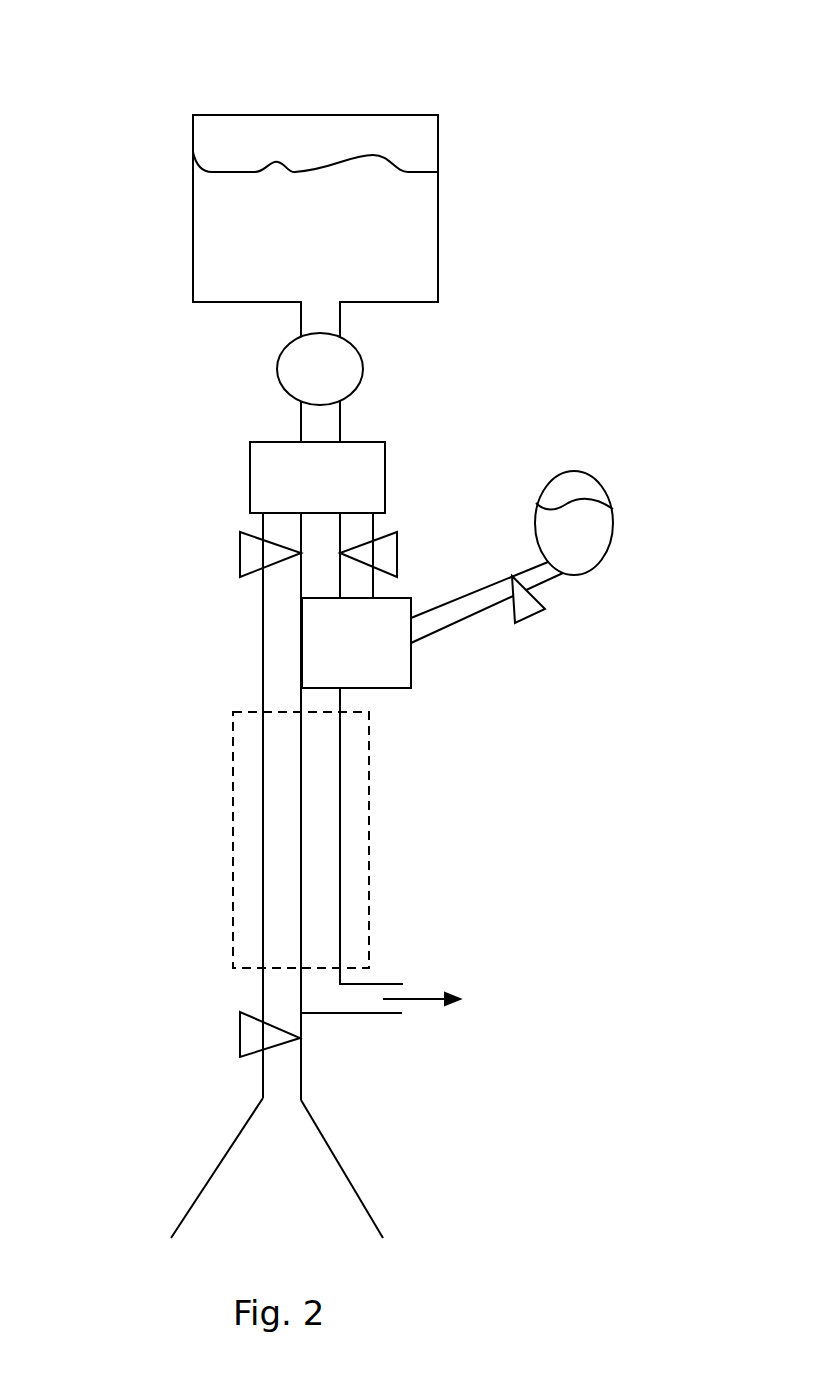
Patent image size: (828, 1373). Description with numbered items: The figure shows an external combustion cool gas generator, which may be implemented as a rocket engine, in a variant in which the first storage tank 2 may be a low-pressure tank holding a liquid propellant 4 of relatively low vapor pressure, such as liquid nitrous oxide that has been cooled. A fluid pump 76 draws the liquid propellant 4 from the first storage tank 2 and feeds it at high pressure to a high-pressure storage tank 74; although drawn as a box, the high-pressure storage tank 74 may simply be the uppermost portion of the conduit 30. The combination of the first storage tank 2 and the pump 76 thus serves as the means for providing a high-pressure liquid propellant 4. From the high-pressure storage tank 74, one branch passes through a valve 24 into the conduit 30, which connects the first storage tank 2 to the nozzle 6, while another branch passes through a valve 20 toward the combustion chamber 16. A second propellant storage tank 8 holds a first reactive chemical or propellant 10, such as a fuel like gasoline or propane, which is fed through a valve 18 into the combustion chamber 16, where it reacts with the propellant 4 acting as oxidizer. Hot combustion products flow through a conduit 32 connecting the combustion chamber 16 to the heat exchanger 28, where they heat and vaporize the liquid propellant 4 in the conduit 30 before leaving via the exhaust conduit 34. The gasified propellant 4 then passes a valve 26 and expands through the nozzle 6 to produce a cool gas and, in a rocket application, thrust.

The first storage tank 2 is at (206, 113).
The liquid propellant 4 is at (240, 248).
The nozzle 6 is at (347, 1172).
The second propellant storage tank 8 is at (600, 483).
The first reactive chemical or propellant 10 is at (582, 539).
The combustion chamber 16 is at (356, 643).
The valve 18 is at (527, 617).
The valve 20 is at (403, 545).
The valve 24 is at (243, 552).
The valve 26 is at (240, 1050).
The heat exchanger 28 is at (369, 872).
The conduit 30 is at (263, 652).
The conduit 32 is at (339, 784).
The exhaust conduit 34 is at (368, 1013).
The high-pressure storage tank 74 is at (317, 477).
The fluid pump 76 is at (277, 377).